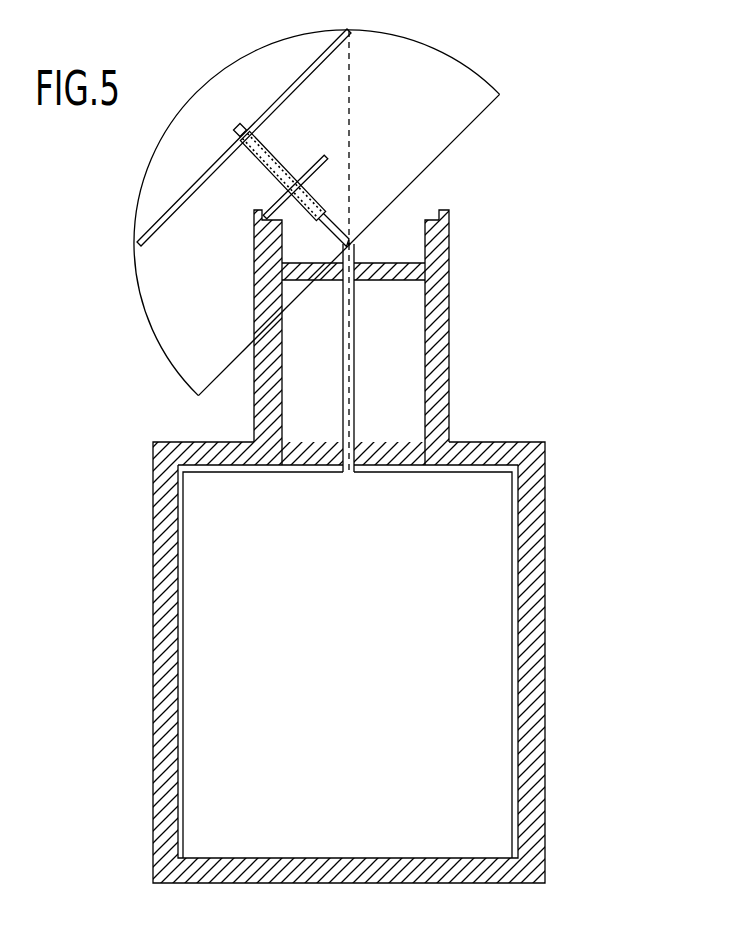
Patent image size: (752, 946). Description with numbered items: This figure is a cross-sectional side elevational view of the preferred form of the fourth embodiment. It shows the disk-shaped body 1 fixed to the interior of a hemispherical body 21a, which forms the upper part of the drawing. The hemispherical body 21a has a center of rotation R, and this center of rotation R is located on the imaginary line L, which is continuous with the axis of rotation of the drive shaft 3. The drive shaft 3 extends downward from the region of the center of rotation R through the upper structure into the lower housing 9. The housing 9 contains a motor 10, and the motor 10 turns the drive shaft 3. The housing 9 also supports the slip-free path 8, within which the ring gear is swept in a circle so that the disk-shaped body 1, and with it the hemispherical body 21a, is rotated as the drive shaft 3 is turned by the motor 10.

The disk-shaped body 1 is at (287, 90).
The drive shaft 3 is at (356, 372).
The slip-free path 8 is at (432, 213).
The housing 9 is at (546, 523).
The motor 10 is at (504, 630).
The hemispherical body 21a is at (403, 38).
The imaginary line L is at (349, 76).
The center of rotation R is at (351, 240).